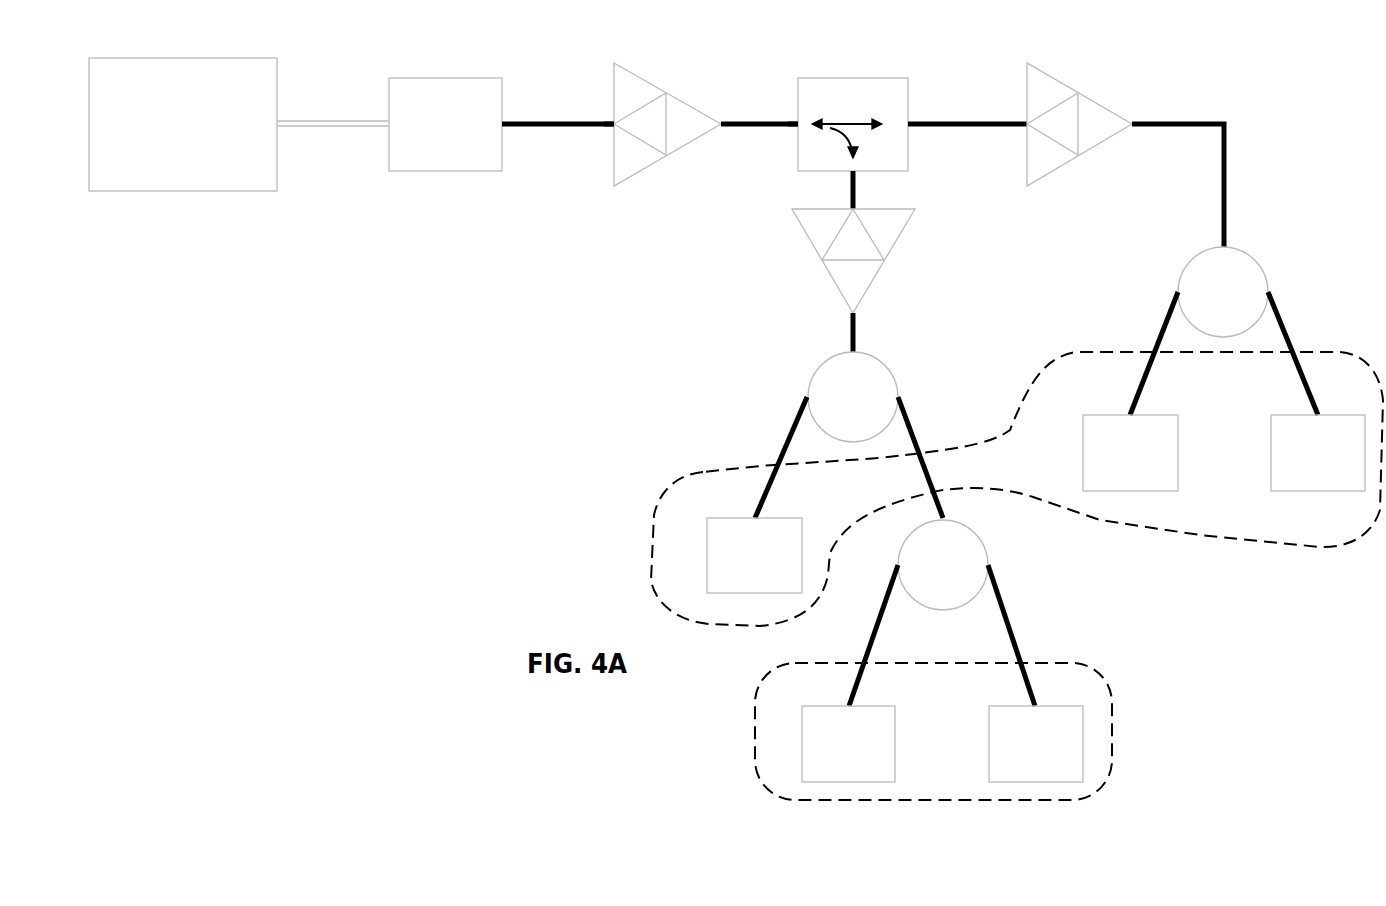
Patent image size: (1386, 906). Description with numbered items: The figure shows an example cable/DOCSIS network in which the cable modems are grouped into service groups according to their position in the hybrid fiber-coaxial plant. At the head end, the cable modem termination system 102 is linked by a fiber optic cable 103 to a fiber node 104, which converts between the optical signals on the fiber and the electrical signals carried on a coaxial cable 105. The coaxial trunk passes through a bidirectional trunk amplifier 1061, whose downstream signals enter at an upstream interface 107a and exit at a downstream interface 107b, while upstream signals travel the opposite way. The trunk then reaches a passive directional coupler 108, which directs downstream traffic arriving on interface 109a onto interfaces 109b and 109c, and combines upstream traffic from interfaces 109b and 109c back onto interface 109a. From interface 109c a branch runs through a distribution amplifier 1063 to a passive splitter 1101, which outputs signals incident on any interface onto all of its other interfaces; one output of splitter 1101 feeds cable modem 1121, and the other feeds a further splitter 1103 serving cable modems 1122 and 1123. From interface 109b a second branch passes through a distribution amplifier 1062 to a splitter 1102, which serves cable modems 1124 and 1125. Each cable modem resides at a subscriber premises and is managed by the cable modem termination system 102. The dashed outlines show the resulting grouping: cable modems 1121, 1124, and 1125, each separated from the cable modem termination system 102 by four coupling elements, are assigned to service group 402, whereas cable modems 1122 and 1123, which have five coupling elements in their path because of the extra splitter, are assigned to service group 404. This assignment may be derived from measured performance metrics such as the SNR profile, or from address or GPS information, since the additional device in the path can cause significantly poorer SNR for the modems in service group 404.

The cable modem termination system 102 is at (183, 51).
The fiber optic cable 103 is at (331, 128).
The fiber node 104 is at (456, 71).
The coaxial cable 105 is at (558, 127).
The amplifier 1061 is at (648, 73).
The amplifier 1062 is at (1060, 73).
The amplifier 1063 is at (902, 230).
The upstream interface 107a is at (612, 122).
The downstream interface 107b is at (724, 122).
The directional coupler 108 is at (880, 78).
The interface 109a is at (796, 126).
The interface 109b is at (910, 122).
The interface 109c is at (848, 178).
The splitter 1101 is at (886, 368).
The splitter 1102 is at (1256, 262).
The splitter 1103 is at (975, 521).
The cable modem 1121 is at (726, 518).
The cable modem 1122 is at (820, 706).
The cable modem 1123 is at (1007, 706).
The cable modem 1124 is at (1100, 415).
The cable modem 1125 is at (1288, 415).
The service group 402 is at (655, 523).
The service group 404 is at (755, 744).